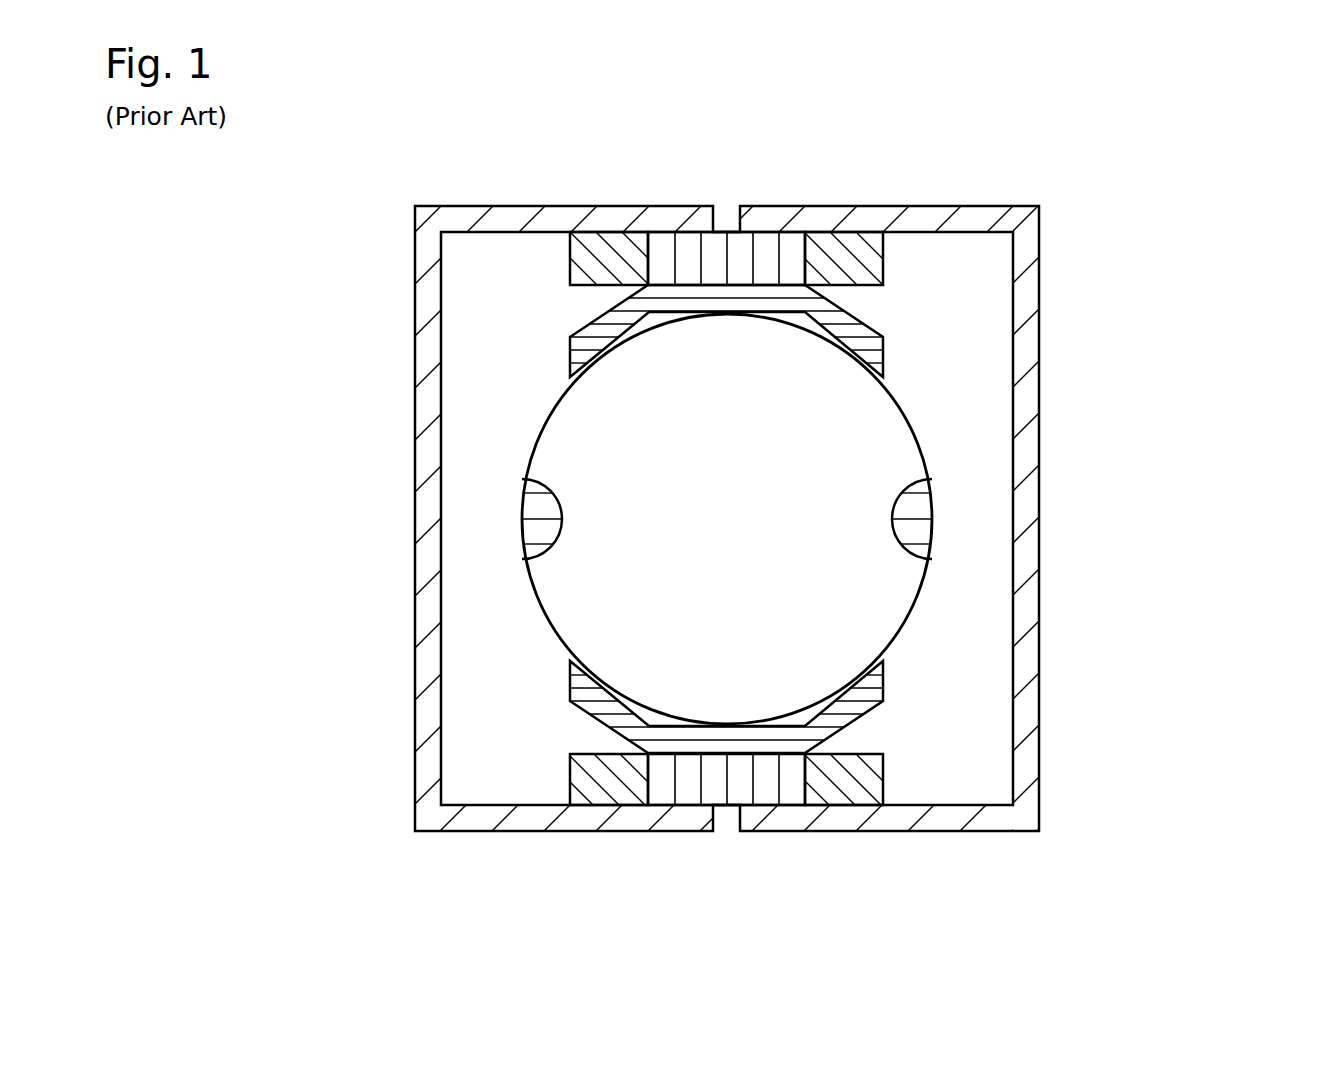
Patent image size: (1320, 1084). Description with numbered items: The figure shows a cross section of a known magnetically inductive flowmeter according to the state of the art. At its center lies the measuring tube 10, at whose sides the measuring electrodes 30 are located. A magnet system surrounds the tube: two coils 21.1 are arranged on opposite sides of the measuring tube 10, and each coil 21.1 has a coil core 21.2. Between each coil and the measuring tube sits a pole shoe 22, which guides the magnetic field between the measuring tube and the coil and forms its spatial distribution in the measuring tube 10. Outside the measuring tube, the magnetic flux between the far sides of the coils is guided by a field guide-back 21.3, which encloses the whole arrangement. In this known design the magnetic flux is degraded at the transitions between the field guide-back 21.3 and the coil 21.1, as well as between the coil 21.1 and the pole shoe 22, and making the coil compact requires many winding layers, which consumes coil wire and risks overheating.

The measuring tube 10 is at (910, 415).
The coil 21.1 is at (623, 247).
The coil core 21.2 is at (732, 243).
The field guide-back 21.3 is at (453, 220).
The pole shoe 22 is at (573, 338).
The measuring electrode 30 is at (532, 505).